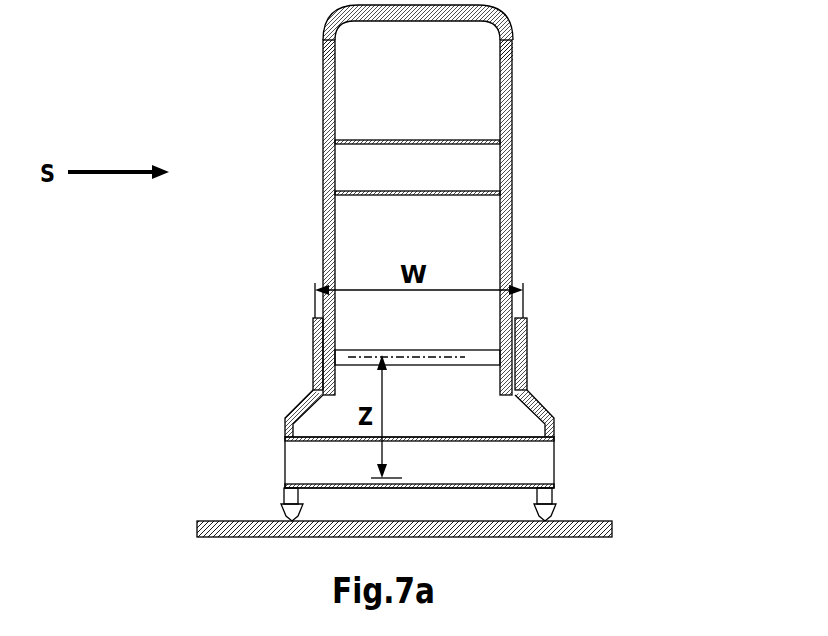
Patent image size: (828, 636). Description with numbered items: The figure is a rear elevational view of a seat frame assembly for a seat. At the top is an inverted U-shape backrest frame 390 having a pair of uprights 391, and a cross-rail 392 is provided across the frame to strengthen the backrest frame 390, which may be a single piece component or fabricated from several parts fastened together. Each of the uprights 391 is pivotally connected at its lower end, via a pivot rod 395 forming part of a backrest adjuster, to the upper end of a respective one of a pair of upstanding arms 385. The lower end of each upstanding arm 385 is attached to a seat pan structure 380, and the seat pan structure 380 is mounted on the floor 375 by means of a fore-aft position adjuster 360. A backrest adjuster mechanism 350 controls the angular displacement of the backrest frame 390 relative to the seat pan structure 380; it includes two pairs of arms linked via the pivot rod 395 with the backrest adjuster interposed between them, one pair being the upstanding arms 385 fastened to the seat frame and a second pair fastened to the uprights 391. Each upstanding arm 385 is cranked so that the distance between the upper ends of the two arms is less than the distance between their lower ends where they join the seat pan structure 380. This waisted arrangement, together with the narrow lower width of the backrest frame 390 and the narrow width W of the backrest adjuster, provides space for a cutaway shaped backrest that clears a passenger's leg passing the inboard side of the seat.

The backrest adjuster mechanism 350 is at (304, 348).
The fore-aft position adjuster 360 is at (283, 506).
The floor 375 is at (612, 530).
The seat pan structure 380 is at (283, 463).
The upstanding arms 385 is at (285, 415).
The backrest frame 390 is at (302, 72).
The uprights 391 is at (323, 105).
The cross-rail 392 is at (420, 140).
The pivot rod 395 is at (430, 367).